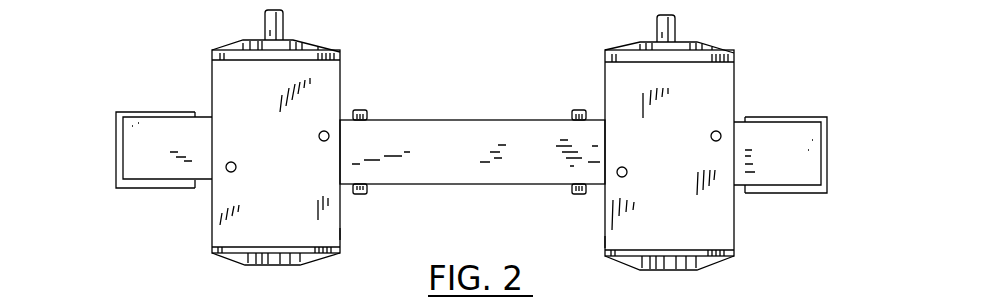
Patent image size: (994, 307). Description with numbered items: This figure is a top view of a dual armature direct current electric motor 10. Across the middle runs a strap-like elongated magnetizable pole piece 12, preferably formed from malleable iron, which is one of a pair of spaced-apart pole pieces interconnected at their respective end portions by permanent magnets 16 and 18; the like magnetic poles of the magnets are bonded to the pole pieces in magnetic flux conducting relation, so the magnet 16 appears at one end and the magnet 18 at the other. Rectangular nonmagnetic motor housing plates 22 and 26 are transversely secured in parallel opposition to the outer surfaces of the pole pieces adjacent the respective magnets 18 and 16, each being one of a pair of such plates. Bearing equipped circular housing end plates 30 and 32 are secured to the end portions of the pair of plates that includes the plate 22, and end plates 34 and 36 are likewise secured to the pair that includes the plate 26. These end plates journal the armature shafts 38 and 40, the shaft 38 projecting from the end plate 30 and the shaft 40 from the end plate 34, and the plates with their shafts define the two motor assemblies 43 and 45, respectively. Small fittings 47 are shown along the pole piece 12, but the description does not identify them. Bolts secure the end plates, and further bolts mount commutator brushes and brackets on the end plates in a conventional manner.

The dual armature direct current electric motor 10 is at (464, 90).
The magnetizable pole piece 12 is at (458, 164).
The permanent magnet 16 is at (116, 158).
The permanent magnet 18 is at (780, 117).
The motor housing plate 22 is at (683, 208).
The motor housing plate 26 is at (292, 170).
The motor circular housing end plate 30 is at (617, 50).
The motor circular housing end plate 32 is at (618, 262).
The motor circular housing end plate 34 is at (318, 45).
The motor circular housing end plate 36 is at (303, 262).
The armature shaft 38 is at (678, 24).
The armature shaft 40 is at (265, 20).
The motor assembly 43 is at (605, 243).
The motor assembly 45 is at (346, 233).
The mounting clips 47 is at (366, 110).